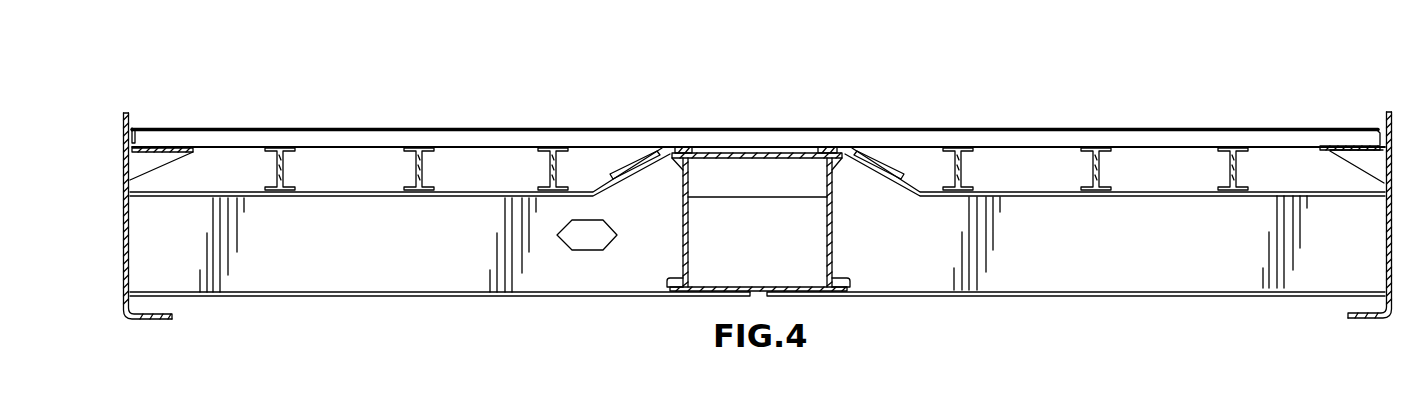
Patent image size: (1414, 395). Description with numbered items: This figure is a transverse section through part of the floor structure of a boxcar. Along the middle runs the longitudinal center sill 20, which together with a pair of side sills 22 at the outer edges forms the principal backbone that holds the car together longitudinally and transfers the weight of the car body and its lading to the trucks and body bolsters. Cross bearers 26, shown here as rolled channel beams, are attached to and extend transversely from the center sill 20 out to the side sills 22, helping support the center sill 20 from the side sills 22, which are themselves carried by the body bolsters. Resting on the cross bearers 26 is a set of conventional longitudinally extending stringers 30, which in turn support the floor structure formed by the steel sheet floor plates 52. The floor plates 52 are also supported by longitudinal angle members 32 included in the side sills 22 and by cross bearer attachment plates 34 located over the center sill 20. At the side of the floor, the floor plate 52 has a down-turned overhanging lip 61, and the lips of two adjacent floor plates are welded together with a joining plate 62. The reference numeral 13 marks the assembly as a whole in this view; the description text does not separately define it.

The pallet assembly 13 is at (1303, 322).
The longitudinal center sill 20 is at (833, 250).
The side sill 22 is at (126, 113).
The cross bearer 26 is at (257, 280).
The stringer 30 is at (553, 167).
The longitudinal angle member 32 is at (178, 151).
The cross bearer attachment plate 34 is at (683, 147).
The floor plate 52 is at (1240, 126).
The down-turned overhanging lip 61 is at (134, 136).
The joining plate 62 is at (140, 128).